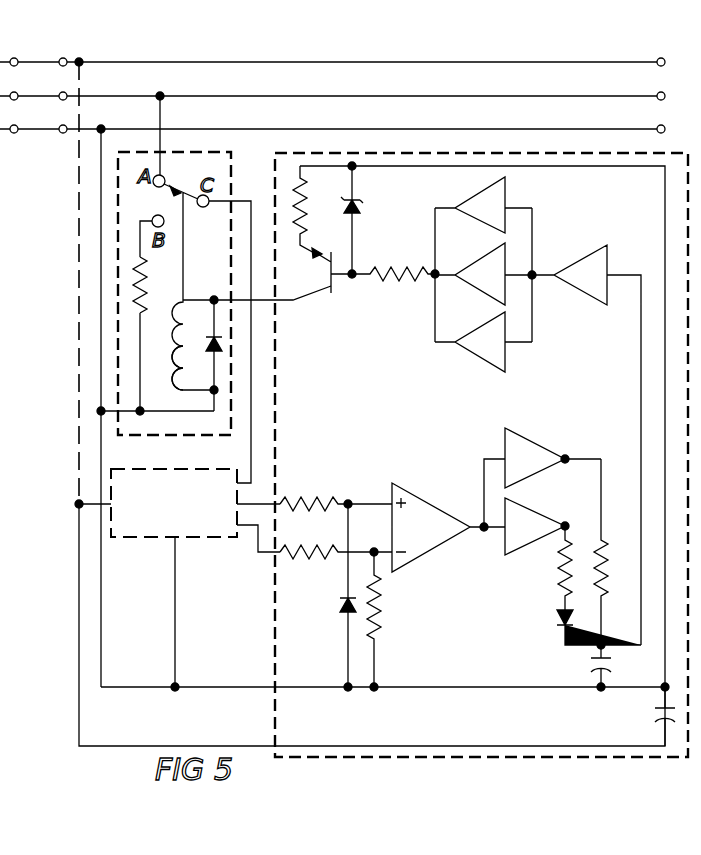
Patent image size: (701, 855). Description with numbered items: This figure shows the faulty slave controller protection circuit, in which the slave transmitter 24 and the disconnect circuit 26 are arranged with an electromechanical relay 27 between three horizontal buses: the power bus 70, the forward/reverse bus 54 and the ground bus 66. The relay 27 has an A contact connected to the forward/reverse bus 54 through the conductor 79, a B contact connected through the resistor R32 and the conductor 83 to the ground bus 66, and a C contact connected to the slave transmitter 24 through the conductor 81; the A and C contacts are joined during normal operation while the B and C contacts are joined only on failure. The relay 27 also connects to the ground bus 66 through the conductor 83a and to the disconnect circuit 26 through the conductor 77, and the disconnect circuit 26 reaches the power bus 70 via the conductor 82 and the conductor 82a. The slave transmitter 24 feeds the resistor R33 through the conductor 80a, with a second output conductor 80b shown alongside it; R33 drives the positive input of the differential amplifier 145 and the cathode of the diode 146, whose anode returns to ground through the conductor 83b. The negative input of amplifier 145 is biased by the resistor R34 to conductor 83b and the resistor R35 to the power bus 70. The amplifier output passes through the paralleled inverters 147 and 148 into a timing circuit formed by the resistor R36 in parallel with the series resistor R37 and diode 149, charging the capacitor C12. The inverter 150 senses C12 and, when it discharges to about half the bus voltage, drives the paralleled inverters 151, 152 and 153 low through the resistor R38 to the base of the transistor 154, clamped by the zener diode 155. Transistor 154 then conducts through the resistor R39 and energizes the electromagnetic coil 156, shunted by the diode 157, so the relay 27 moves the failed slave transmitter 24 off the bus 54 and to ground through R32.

The power bus 70 is at (383, 62).
The forward/reverse bus 54 is at (380, 96).
The ground bus 66 is at (377, 129).
The conductor 79 is at (162, 118).
The electromechanical relay 27 is at (222, 152).
The conductor 81 is at (247, 201).
The conductor 83 is at (101, 329).
The conductor 82 is at (79, 381).
The conductor 83a is at (101, 415).
The conductor 83b is at (215, 687).
The conductor 82a is at (79, 700).
The slave transmitter 24 is at (155, 469).
The disconnect circuit 26 is at (275, 645).
The conductor 77 is at (264, 302).
The conductor 80a is at (271, 504).
The transmitter output 80b is at (258, 555).
The transistor 154 is at (334, 287).
The zener diode 155 is at (360, 204).
The electromagnetic coil 156 is at (170, 362).
The diode 157 is at (195, 328).
The differential amplifier 145 is at (410, 487).
The diode 146 is at (340, 606).
The inverter 147 is at (505, 432).
The inverter 148 is at (505, 550).
The diode 149 is at (560, 622).
The inverter 150 is at (592, 262).
The inverter 151 is at (480, 195).
The inverter 152 is at (488, 262).
The inverter 153 is at (488, 330).
The resistor R32 is at (159, 316).
The resistor R33 is at (336, 494).
The resistor R34 is at (395, 619).
The resistor R35 is at (336, 542).
The resistor R36 is at (619, 554).
The resistor R37 is at (547, 568).
The resistor R38 is at (395, 265).
The resistor R39 is at (321, 210).
The capacitor C12 is at (595, 658).